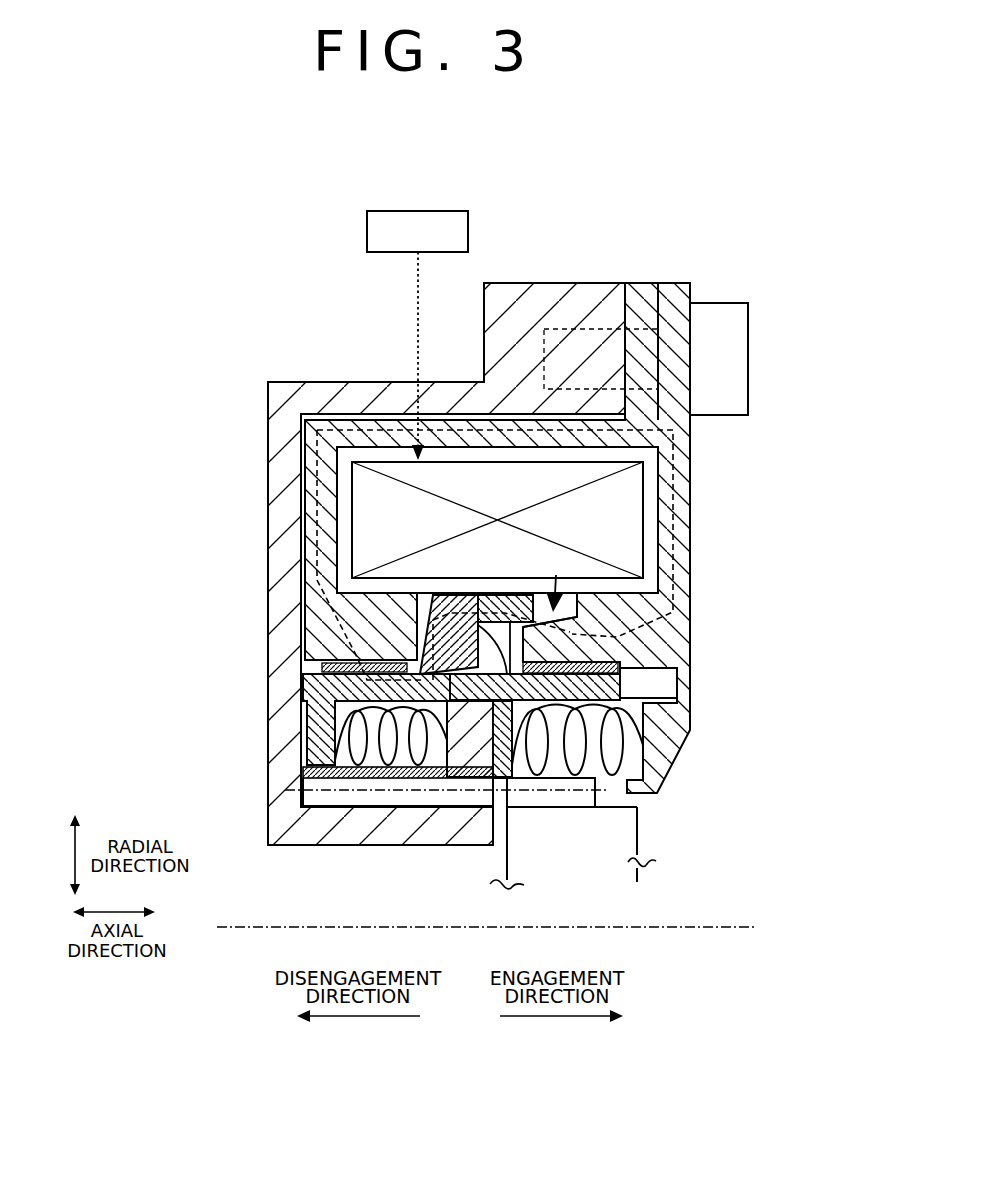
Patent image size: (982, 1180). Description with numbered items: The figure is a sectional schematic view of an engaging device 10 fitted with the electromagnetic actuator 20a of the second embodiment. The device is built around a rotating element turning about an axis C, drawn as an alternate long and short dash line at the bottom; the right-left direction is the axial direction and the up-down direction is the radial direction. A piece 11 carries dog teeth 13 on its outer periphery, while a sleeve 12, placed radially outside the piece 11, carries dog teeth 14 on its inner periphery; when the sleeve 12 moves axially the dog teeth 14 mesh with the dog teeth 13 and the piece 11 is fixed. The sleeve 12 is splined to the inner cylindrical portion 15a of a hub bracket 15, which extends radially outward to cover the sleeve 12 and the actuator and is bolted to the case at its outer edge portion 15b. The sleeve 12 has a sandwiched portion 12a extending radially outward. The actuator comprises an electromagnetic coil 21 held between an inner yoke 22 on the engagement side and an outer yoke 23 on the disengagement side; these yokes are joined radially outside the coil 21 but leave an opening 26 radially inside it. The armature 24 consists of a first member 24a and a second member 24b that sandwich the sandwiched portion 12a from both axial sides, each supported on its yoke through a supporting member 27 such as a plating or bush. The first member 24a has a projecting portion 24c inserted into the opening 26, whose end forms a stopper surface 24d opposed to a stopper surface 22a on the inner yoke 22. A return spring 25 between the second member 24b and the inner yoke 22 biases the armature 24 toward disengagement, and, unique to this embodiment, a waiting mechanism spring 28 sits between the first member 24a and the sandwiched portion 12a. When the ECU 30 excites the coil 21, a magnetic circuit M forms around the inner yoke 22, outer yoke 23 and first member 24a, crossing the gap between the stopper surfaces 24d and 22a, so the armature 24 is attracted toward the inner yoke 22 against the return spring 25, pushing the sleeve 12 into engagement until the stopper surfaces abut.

The engaging device 10 is at (243, 215).
The piece 11 is at (642, 862).
The sleeve 12 is at (420, 717).
The sandwiched portion 12a is at (506, 597).
The dog teeth 13 is at (540, 808).
The dog teeth 14 is at (318, 798).
The hub bracket 15 is at (280, 593).
The inner cylindrical portion 15a is at (475, 833).
The outer edge portion 15b is at (572, 295).
The electromagnetic actuator 20a is at (700, 455).
The electromagnetic coil 21 is at (632, 497).
The inner yoke 22 is at (682, 556).
The stopper surface 22a is at (523, 600).
The outer yoke 23 is at (352, 432).
The armature 24 is at (482, 702).
The first member 24a is at (310, 700).
The second member 24b is at (680, 697).
The projecting portion 24c is at (447, 603).
The stopper surface 24d is at (458, 600).
The return spring 25 is at (628, 755).
The opening 26 is at (556, 578).
The supporting member 27 is at (688, 661).
The waiting mechanism spring 28 is at (348, 757).
The ECU 30 is at (367, 232).
The magnetic circuit M is at (692, 594).
The axis C is at (697, 930).